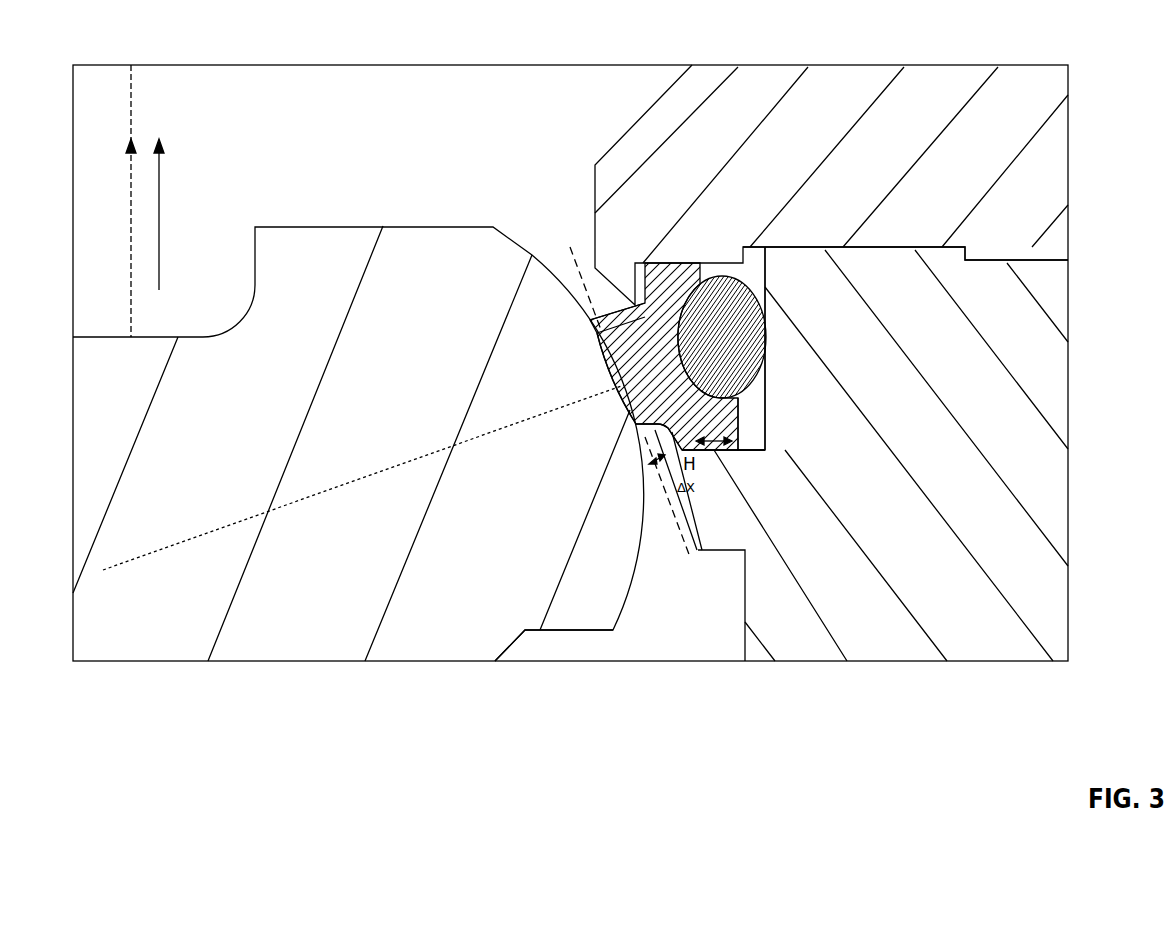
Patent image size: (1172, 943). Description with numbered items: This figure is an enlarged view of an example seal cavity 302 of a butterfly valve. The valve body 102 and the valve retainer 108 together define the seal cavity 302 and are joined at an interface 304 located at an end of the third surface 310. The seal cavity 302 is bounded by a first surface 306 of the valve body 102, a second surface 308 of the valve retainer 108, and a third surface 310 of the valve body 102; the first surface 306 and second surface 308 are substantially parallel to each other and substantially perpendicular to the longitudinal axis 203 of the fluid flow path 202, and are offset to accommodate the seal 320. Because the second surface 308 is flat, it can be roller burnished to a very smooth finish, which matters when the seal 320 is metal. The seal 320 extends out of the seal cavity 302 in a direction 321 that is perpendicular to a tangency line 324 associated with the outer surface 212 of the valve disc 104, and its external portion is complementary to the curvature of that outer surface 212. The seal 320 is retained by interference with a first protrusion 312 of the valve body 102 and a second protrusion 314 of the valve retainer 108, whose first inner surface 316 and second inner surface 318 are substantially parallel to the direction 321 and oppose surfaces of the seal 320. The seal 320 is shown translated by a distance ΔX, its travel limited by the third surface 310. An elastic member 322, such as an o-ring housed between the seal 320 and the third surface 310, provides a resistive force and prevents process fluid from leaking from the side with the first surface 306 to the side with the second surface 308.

The valve body 102 is at (1068, 362).
The valve disc 104 is at (385, 238).
The valve retainer 108 is at (628, 140).
The fluid flow path 202 is at (160, 207).
The longitudinal axis 203 is at (132, 84).
The outer surface 212 is at (642, 515).
The seal cavity 302 is at (760, 422).
The interface 304 is at (843, 247).
The first surface 306 is at (727, 453).
The second surface 308 is at (658, 263).
The third surface 310 is at (767, 403).
The first protrusion 312 is at (658, 465).
The second protrusion 314 is at (617, 250).
The first inner surface 316 is at (645, 428).
The second inner surface 318 is at (600, 325).
The seal 320 is at (632, 370).
The direction 321 is at (415, 452).
The elastic member 322 is at (758, 288).
The tangency line 324 is at (685, 545).